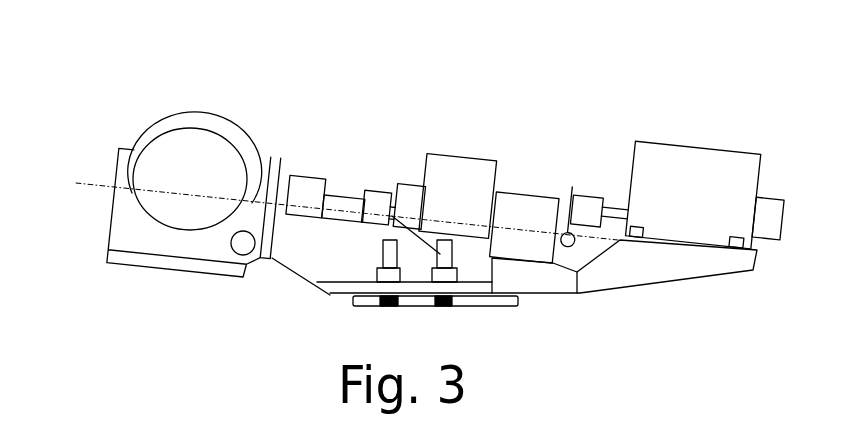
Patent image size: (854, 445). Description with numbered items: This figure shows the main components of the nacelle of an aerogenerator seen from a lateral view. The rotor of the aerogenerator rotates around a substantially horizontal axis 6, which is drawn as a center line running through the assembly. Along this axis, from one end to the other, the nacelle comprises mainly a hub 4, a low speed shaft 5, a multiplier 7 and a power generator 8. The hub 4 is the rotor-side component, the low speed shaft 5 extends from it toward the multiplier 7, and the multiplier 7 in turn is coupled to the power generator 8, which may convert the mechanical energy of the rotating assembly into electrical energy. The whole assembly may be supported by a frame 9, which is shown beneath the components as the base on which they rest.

The hub 4 is at (178, 247).
The low speed shaft 5 is at (338, 200).
The substantially horizontal axis 6 is at (90, 183).
The multiplier 7 is at (452, 167).
The power generator 8 is at (682, 163).
The frame 9 is at (550, 280).